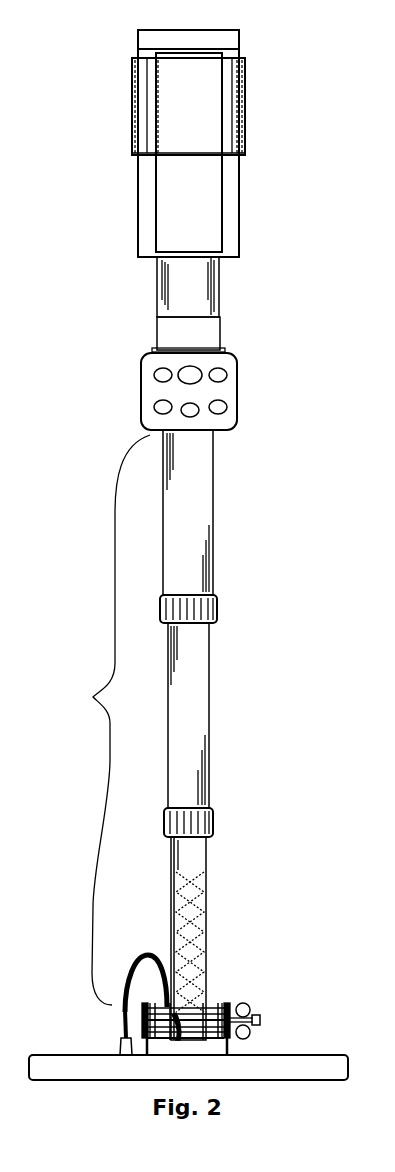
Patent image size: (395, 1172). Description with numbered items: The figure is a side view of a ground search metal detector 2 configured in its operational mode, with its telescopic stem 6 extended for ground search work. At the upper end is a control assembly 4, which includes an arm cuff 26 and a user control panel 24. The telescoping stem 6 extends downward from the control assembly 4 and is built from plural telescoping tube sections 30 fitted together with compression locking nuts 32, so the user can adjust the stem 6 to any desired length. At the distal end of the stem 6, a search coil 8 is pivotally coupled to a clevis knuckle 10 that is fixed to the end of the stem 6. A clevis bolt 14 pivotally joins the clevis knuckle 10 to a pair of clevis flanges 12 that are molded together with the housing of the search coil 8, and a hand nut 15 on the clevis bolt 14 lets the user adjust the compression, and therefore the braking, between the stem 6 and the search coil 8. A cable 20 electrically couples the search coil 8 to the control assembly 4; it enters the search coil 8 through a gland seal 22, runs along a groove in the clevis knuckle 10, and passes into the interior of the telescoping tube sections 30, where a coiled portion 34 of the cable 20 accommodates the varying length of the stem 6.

The ground search metal detector 2 is at (313, 678).
The control assembly 4 is at (239, 185).
The telescopic stem 6 is at (115, 720).
The search coil 8 is at (330, 1055).
The clevis knuckle 10 is at (215, 1000).
The clevis flanges 12 is at (150, 1002).
The clevis bolt 14 is at (260, 1022).
The hand nut 15 is at (253, 1007).
The cable 20 is at (143, 953).
The gland seal 22 is at (117, 1047).
The user control panel 24 is at (238, 400).
The arm cuff 26 is at (244, 58).
The telescoping tube sections 30 is at (220, 298).
The compression locking nuts 32 is at (217, 618).
The coiled portion 34 is at (193, 915).